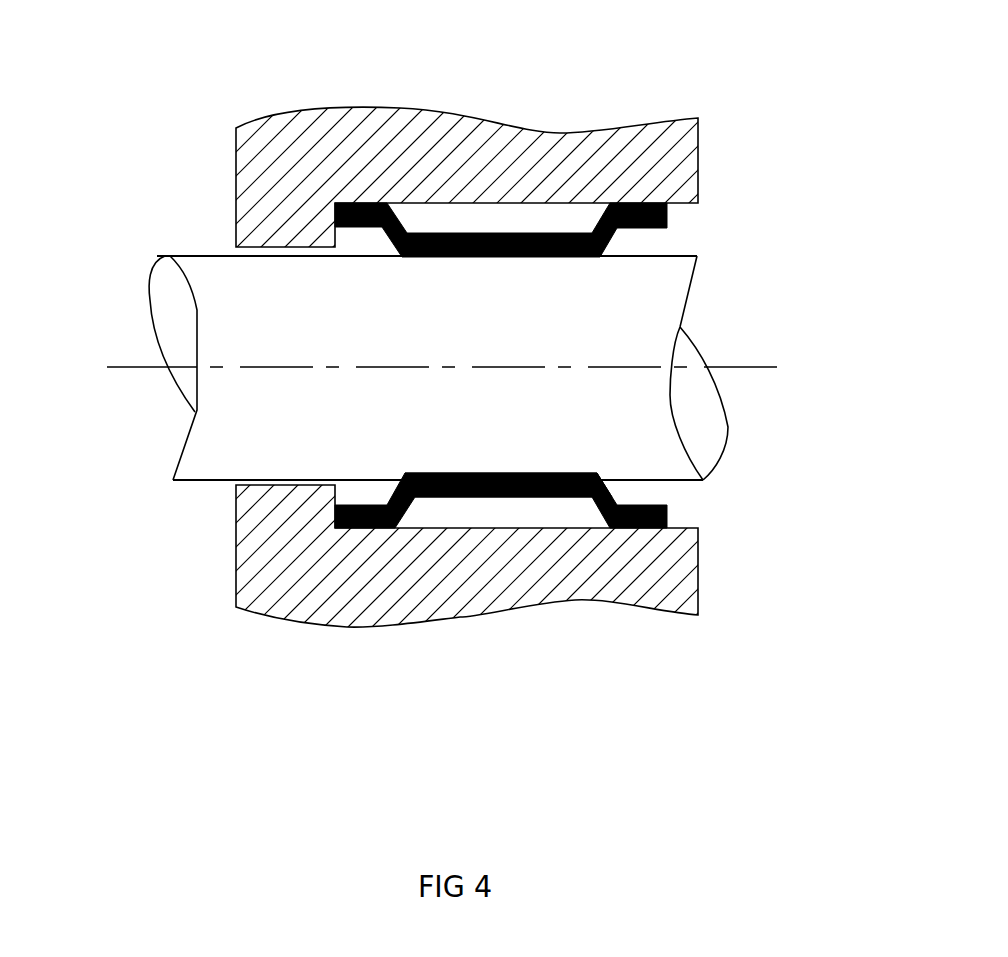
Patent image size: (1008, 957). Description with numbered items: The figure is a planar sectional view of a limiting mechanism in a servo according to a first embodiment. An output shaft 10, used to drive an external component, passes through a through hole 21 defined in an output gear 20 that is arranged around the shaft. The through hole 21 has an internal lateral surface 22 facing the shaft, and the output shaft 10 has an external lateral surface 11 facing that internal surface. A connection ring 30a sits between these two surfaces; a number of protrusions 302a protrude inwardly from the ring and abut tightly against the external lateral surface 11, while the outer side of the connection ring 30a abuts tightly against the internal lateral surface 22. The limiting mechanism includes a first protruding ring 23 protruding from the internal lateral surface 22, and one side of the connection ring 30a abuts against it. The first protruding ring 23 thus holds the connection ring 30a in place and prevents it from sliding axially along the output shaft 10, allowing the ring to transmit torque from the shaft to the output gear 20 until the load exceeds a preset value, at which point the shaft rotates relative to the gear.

The output shaft 10 is at (475, 322).
The external lateral surface 11 is at (676, 496).
The output gear 20 is at (337, 182).
The through hole 21 is at (690, 238).
The internal lateral surface 22 is at (545, 227).
The first protruding ring 23 is at (300, 507).
The connection ring 30a is at (642, 518).
The protrusions 302a is at (500, 488).